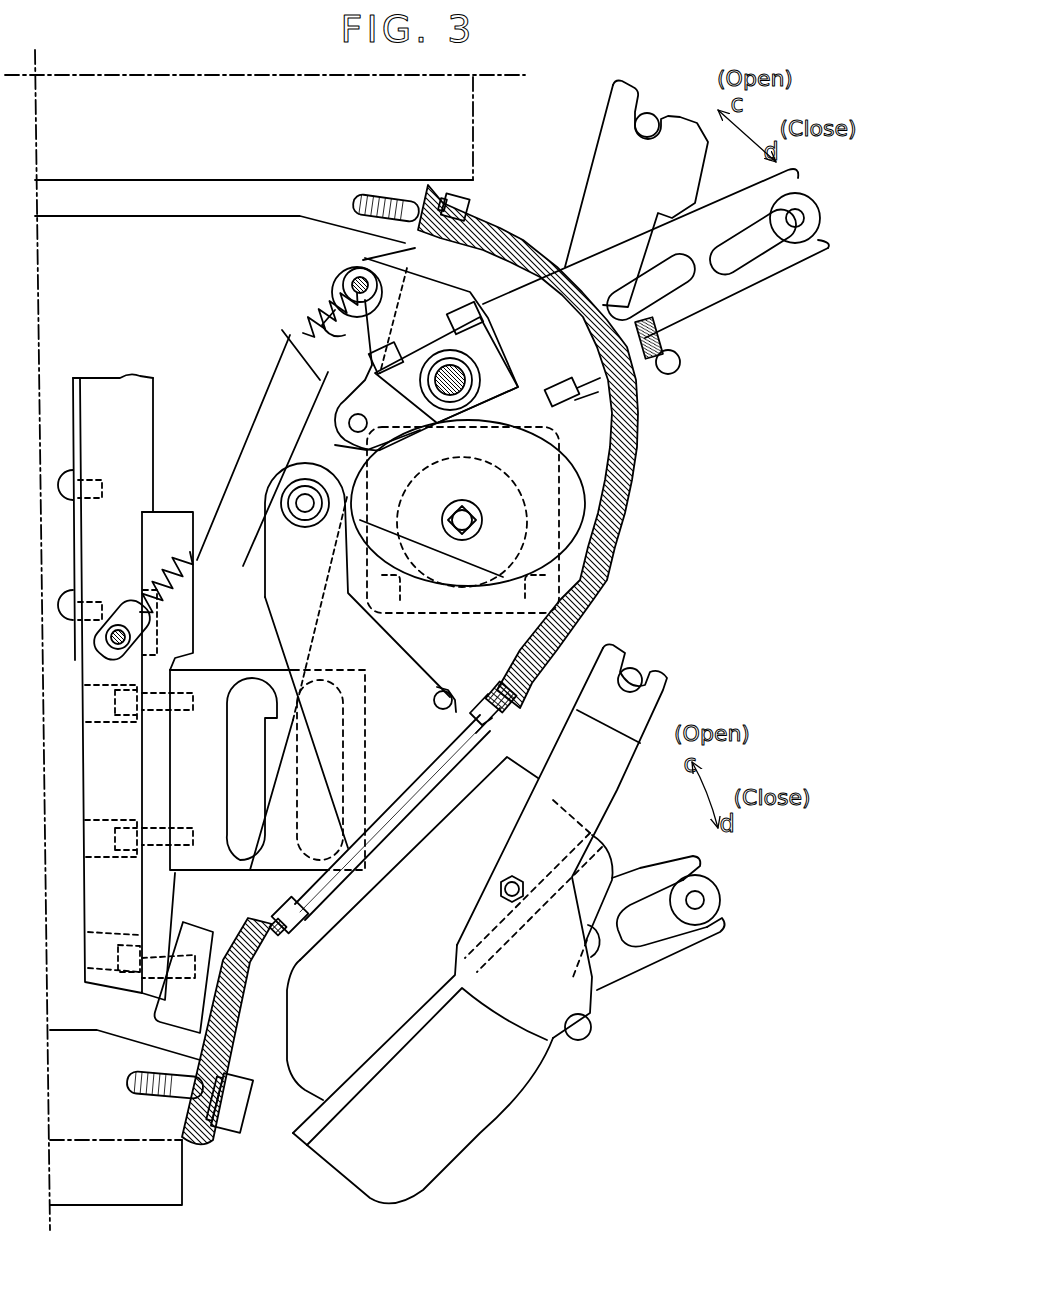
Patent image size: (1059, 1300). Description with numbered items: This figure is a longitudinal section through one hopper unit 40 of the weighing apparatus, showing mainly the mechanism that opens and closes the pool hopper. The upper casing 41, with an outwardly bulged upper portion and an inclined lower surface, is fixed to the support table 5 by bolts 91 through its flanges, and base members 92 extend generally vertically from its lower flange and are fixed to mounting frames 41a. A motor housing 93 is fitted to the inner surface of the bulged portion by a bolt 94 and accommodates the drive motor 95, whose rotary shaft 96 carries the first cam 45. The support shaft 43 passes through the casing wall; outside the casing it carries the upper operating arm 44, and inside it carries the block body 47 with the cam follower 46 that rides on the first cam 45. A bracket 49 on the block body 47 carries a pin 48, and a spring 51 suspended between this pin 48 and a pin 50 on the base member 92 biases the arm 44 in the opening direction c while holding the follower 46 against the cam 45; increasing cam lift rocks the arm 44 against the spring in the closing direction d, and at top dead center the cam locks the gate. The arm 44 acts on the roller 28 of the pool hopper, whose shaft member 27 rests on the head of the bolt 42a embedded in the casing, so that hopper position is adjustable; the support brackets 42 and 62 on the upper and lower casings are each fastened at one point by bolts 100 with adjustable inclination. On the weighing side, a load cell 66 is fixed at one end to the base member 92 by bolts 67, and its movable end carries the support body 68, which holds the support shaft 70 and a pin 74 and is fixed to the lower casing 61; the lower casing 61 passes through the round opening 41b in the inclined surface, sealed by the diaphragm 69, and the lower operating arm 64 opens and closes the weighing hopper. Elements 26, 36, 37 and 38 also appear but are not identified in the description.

The support table 5 is at (465, 132).
The upper pin 26 is at (650, 115).
The shaft member 27 is at (683, 370).
The roller 28 is at (799, 205).
The lower pin 36 is at (640, 672).
The lower stopper pin 37 is at (586, 1038).
The lower lever pivot pin 38 is at (710, 893).
The hopper unit 40 is at (713, 561).
The upper casing 41 is at (630, 496).
The mounting frame 41a is at (110, 378).
The round opening 41b is at (236, 1006).
The support bracket 42 is at (592, 195).
The bolt 42a is at (652, 360).
The support shaft 43 is at (428, 385).
The upper operating arm 44 is at (718, 308).
The first cam 45 is at (570, 535).
The cam follower 46 is at (347, 430).
The block body 47 is at (487, 355).
The pin 48 is at (342, 278).
The bracket 49 is at (437, 292).
The pin 50 is at (110, 640).
The spring 51 is at (250, 432).
The lower casing 61 is at (478, 1137).
The support bracket 62 is at (612, 795).
The lower operating arm 64 is at (642, 965).
The load cell 66 is at (243, 668).
The bolts 67 is at (115, 725).
The support body 68 is at (276, 582).
The diaphragm 69 is at (500, 725).
The support shaft 70 is at (300, 506).
The pin 74 is at (450, 688).
The bolts 91 is at (470, 214).
The base member 92 is at (110, 978).
The motor housing 93 is at (490, 603).
The bolt 94 is at (555, 384).
The drive motor 95 is at (447, 575).
The rotary shaft 96 is at (465, 510).
The bolts 100 is at (501, 884).